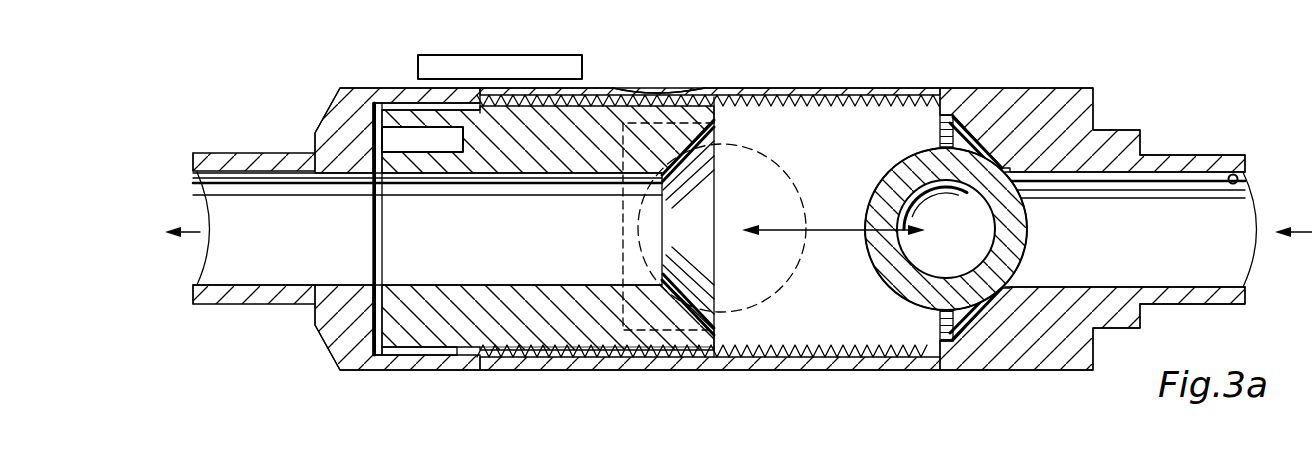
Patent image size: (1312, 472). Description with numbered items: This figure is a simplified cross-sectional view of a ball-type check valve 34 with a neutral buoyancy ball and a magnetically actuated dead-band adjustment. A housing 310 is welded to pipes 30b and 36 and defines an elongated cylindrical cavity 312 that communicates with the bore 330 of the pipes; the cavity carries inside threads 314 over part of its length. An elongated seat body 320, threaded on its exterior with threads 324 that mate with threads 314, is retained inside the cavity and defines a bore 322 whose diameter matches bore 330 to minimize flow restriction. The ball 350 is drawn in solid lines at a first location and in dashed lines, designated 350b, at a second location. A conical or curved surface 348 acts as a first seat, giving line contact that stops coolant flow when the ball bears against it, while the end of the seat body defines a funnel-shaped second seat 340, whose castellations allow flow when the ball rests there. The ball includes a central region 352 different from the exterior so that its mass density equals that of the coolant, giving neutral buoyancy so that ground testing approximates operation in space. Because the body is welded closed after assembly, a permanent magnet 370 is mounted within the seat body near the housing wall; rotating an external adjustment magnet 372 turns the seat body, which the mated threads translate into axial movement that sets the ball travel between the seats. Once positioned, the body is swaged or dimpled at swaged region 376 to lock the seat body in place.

The check valve 34 is at (982, 56).
The pipe 36 is at (277, 152).
The pipe 30b is at (1203, 155).
The housing 310 is at (1081, 88).
The elongated cylindrical cavity 312 is at (806, 110).
The inside threads 314 is at (860, 354).
The seat body 320 is at (455, 355).
The bore 322 is at (480, 285).
The threads 324 is at (583, 352).
The bore 330 is at (1239, 178).
The second seat 340 is at (714, 140).
The first seat 348 is at (940, 322).
The ball 350 is at (895, 160).
The ball 350b is at (760, 310).
The central region 352 is at (905, 255).
The permanent magnet 370 is at (395, 137).
The adjustment magnet 372 is at (503, 55).
The swaged region 376 is at (670, 92).